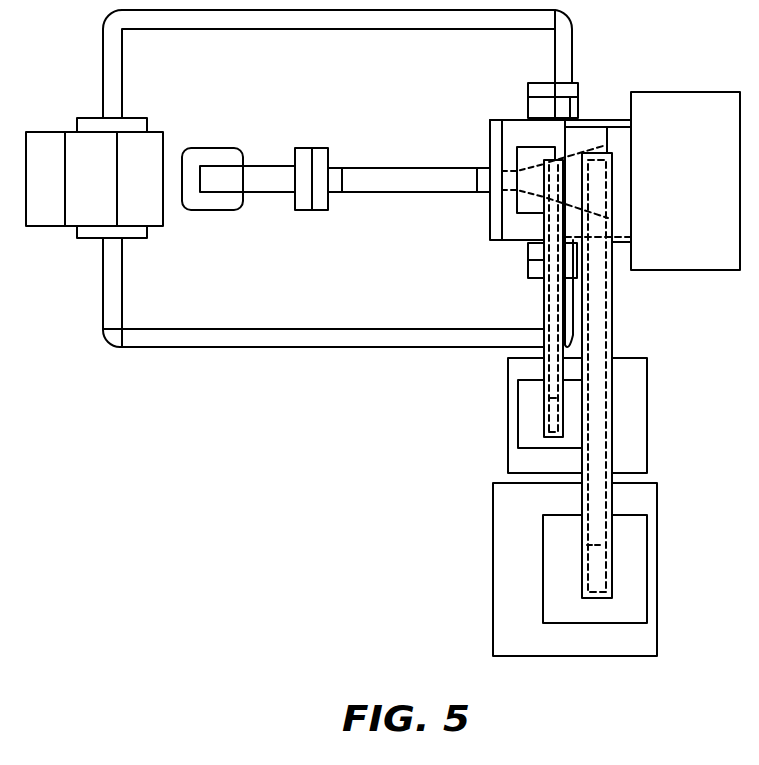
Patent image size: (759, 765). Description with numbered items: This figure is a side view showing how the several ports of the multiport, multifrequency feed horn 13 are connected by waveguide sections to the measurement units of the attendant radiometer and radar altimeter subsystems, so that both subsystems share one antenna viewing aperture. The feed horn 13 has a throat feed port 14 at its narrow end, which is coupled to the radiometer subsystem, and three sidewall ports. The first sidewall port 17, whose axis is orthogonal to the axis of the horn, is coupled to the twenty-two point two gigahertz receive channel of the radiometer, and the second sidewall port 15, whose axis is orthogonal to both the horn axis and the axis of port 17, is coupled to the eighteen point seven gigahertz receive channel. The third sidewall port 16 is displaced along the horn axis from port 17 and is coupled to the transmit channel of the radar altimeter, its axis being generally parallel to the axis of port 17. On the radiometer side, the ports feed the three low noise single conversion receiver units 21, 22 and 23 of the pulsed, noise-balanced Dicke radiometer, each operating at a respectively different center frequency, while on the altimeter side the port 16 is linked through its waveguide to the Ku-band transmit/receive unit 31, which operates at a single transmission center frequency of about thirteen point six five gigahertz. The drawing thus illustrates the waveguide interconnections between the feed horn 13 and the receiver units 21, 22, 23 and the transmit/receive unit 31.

The multiport, multifrequency feed horn 13 is at (520, 120).
The throat feed port 14 is at (490, 162).
The second sidewall port 15 is at (518, 208).
The third sidewall port 16 is at (612, 180).
The first sidewall port 17 is at (578, 92).
The low noise single conversion receiver unit 21 is at (631, 358).
The low noise single conversion receiver unit 22 is at (90, 117).
The low noise single conversion receiver unit 23 is at (212, 148).
The Ku-band transmit/receive unit 31 is at (657, 483).